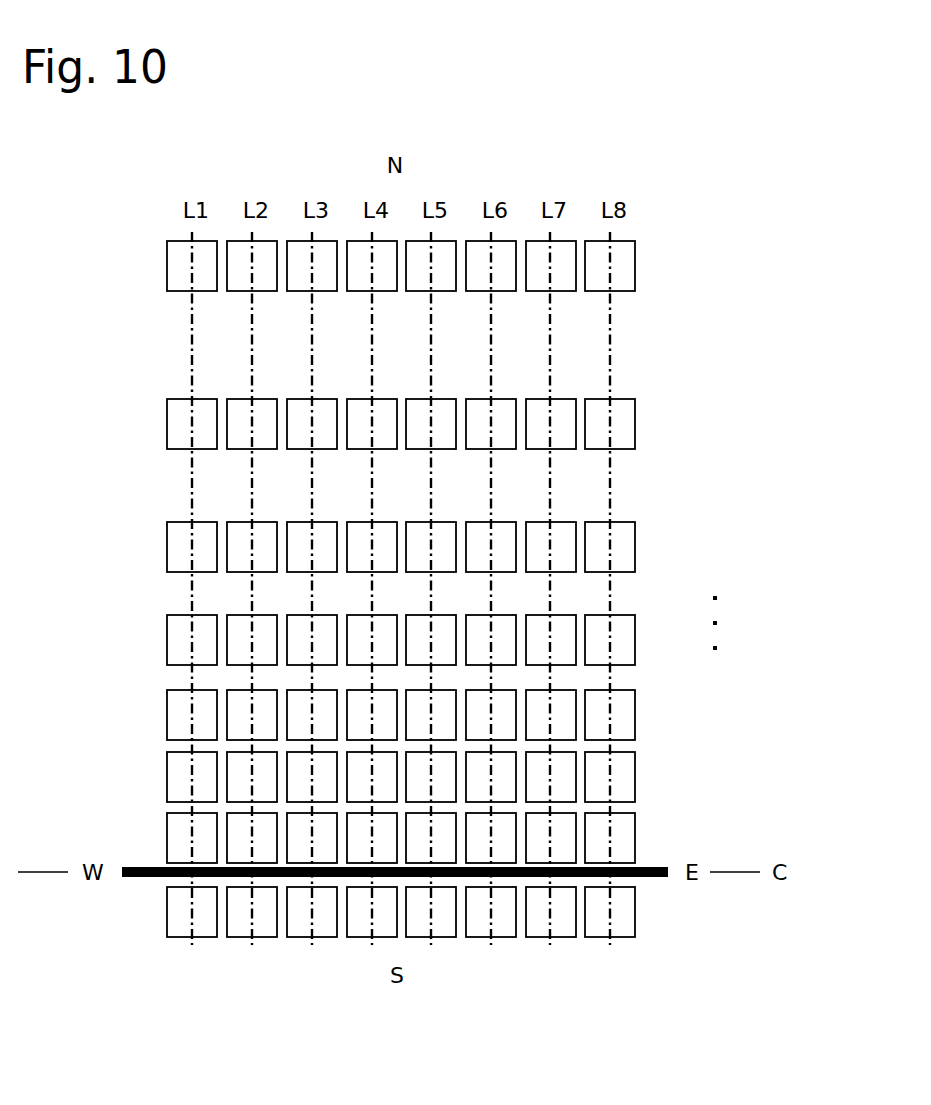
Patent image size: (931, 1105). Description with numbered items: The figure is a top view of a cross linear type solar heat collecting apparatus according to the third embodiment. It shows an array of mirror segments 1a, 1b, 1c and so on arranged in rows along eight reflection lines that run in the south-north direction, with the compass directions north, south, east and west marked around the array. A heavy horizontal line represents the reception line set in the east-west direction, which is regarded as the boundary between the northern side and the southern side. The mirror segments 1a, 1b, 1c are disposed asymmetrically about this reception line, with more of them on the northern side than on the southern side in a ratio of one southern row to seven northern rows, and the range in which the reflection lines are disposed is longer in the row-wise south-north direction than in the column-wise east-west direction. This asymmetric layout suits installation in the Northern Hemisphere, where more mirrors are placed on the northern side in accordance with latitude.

The mirror segment 1a is at (635, 262).
The mirror segment 1b is at (635, 414).
The mirror segment 1c is at (635, 540).